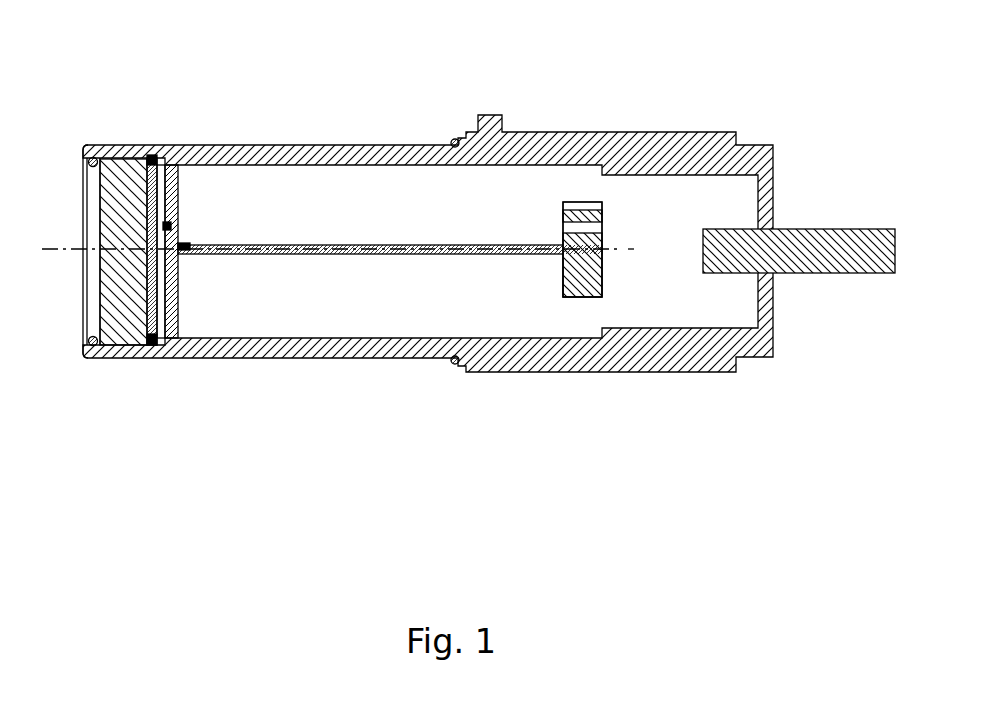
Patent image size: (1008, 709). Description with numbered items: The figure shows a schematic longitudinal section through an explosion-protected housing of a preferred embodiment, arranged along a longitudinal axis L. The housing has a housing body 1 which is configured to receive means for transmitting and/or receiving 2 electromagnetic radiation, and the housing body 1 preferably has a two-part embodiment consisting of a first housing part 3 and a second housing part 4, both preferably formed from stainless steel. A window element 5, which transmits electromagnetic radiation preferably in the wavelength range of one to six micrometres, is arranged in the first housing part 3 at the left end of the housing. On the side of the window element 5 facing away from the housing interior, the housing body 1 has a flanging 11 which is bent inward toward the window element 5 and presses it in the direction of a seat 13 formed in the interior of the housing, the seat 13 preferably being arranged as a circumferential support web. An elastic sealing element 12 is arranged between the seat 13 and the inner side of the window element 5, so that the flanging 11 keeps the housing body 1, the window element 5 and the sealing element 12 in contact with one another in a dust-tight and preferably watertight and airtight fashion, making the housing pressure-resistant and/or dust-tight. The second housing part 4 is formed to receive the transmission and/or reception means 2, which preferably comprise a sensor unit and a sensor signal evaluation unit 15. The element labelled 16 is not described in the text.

The housing body 1 is at (578, 115).
The means for transmitting and/or receiving electromagnetic radiation 2 is at (290, 258).
The first housing part 3 is at (180, 358).
The second housing part 4 is at (630, 372).
The window element 5 is at (118, 284).
The flanging 11 is at (92, 140).
The elastic sealing element 12 is at (153, 148).
The seat 13 is at (155, 156).
The sensor signal evaluation unit 15 is at (170, 226).
The seal 16 is at (122, 357).
The longitudinal axis L is at (72, 248).